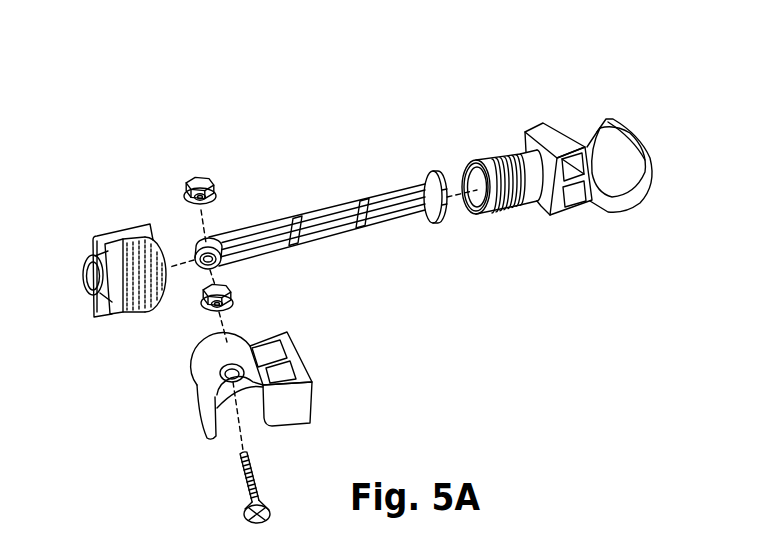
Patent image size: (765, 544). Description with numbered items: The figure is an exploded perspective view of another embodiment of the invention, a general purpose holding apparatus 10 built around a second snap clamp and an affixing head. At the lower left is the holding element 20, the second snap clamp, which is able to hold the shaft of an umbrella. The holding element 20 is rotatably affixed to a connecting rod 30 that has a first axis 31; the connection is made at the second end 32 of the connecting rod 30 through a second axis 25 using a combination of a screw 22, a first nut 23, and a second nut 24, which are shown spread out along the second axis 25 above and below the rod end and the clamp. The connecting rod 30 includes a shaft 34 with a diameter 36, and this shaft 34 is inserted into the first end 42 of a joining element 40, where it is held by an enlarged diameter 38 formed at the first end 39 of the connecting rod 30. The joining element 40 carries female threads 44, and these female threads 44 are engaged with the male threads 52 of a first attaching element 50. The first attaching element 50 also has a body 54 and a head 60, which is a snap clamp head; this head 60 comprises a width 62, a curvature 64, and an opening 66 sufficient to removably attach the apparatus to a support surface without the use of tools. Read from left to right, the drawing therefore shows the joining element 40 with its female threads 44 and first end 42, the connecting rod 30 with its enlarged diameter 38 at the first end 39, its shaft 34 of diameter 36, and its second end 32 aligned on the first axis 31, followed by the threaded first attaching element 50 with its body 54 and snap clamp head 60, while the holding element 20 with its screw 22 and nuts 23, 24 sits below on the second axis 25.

The general purpose holding apparatus 10 is at (402, 90).
The holding element 20 is at (193, 405).
The screw 22 is at (255, 474).
The first nut 23 is at (232, 302).
The second nut 24 is at (188, 196).
The second axis 25 is at (205, 210).
The connecting rod 30 is at (325, 221).
The first axis 31 is at (462, 188).
The second end 32 is at (197, 262).
The shaft 34 is at (343, 212).
The diameter 36 is at (363, 233).
The enlarged diameter 38 is at (424, 172).
The first end 39 is at (447, 212).
The joining element 40 is at (134, 295).
The first end 42 is at (90, 300).
The female threads 44 is at (160, 242).
The first attaching element 50 is at (592, 163).
The male threads 52 is at (491, 158).
The body 54 is at (531, 200).
The head 60 is at (580, 203).
The width 62 is at (627, 126).
The curvature 64 is at (633, 193).
The opening 66 is at (592, 134).